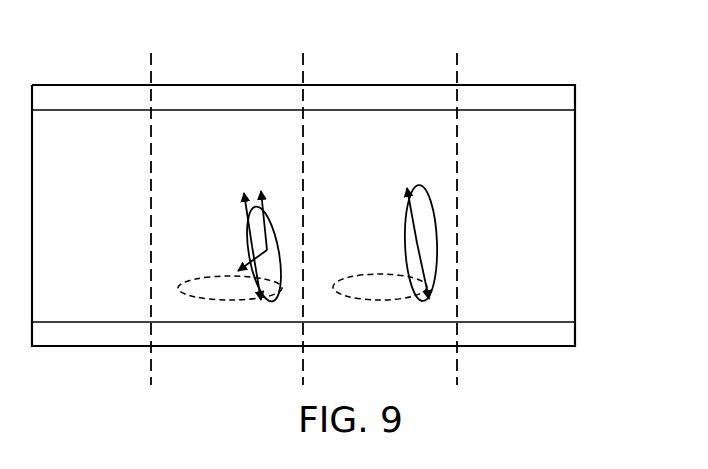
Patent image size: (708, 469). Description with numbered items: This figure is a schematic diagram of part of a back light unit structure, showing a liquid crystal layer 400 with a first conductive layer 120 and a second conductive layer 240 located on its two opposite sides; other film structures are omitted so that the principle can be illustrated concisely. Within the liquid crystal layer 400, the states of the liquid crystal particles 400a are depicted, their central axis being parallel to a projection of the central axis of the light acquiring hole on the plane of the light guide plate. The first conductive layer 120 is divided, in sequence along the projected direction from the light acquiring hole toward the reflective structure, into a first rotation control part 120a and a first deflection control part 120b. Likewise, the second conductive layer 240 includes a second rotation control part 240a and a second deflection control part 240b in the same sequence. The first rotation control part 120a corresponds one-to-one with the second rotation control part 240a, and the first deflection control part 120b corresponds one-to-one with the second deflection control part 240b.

The first conductive layer 120 is at (567, 100).
The first rotation control part 120a is at (206, 95).
The first deflection control part 120b is at (356, 95).
The liquid crystal layer 400 is at (567, 228).
The liquid crystal particles 400a is at (247, 232).
The second conductive layer 240 is at (567, 335).
The second rotation control part 240a is at (203, 337).
The second deflection control part 240b is at (357, 337).